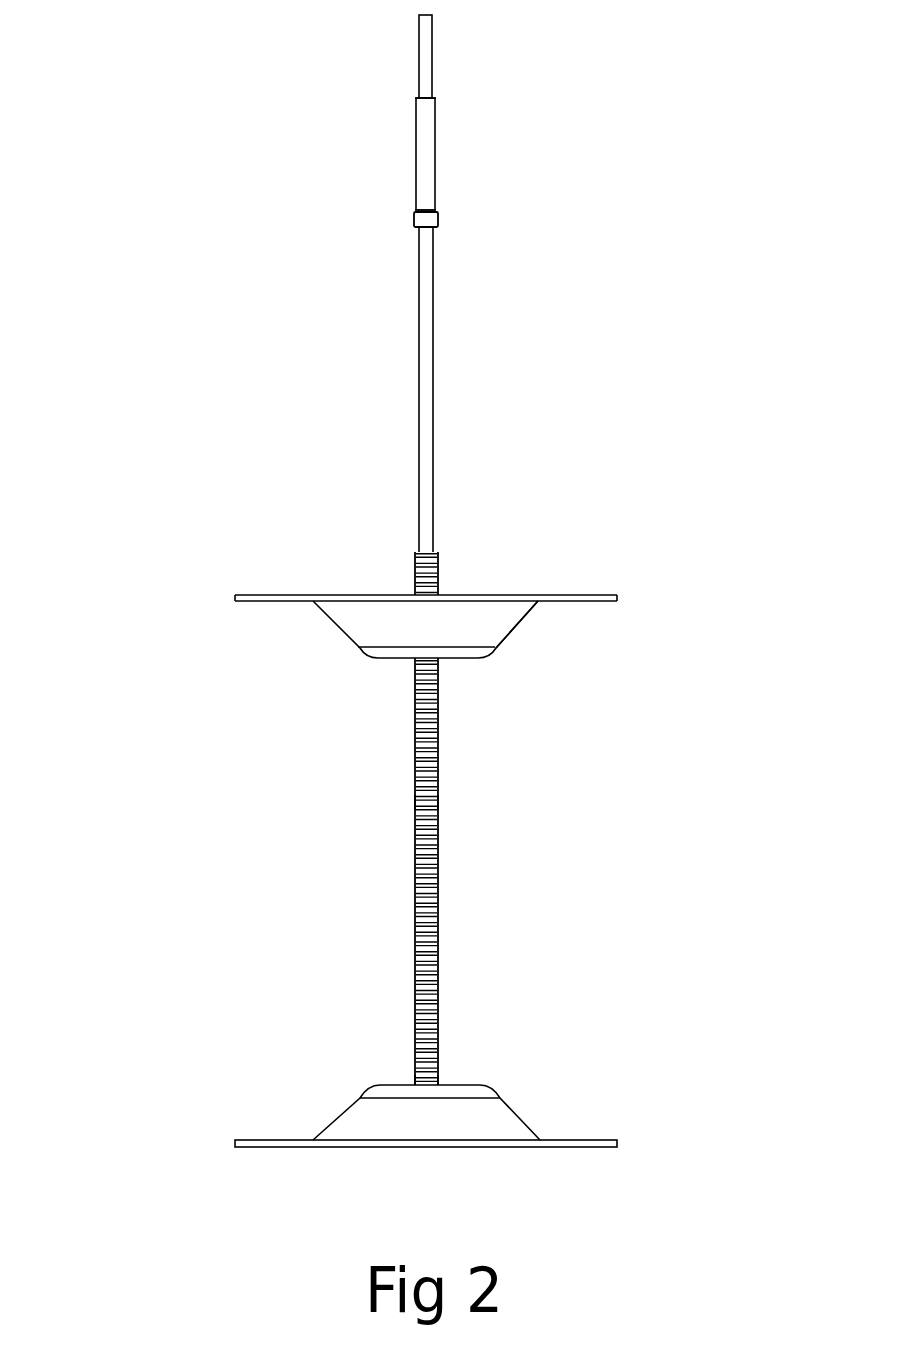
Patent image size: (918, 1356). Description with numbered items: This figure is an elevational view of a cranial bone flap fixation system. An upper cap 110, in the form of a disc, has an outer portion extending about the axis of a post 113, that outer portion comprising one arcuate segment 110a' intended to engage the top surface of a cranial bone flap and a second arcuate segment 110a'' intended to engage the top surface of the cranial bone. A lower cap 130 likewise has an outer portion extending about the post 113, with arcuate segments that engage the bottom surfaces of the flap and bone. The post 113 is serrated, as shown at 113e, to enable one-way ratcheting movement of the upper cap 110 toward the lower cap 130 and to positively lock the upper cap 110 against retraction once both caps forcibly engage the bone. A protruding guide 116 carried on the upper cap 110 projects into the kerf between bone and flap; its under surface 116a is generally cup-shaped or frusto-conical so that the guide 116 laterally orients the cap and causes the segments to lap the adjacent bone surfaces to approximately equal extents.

The upper cap 110 is at (530, 292).
The arcuate segment 110a' is at (259, 546).
The second arcuate segment 110a'' is at (597, 566).
The protruding guide 116 is at (360, 672).
The guide under surface 116a is at (594, 655).
The post 113 is at (517, 818).
The serrations 113e is at (429, 940).
The lower cap 130 is at (399, 1166).